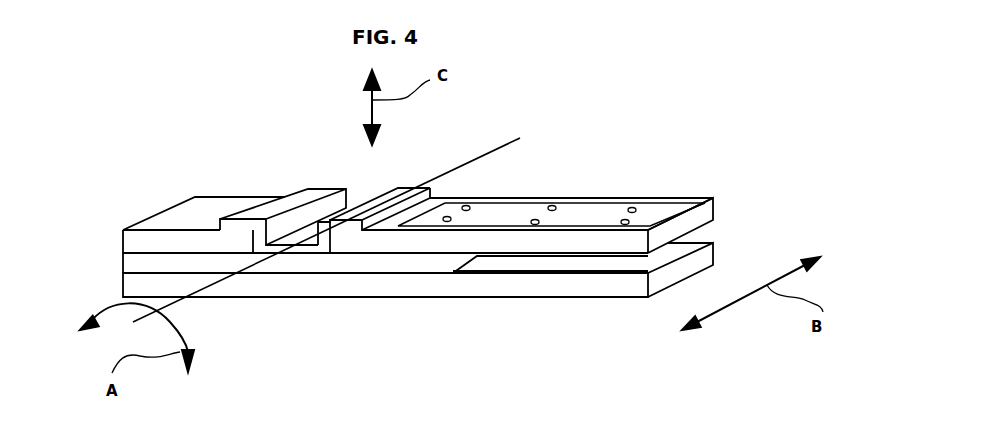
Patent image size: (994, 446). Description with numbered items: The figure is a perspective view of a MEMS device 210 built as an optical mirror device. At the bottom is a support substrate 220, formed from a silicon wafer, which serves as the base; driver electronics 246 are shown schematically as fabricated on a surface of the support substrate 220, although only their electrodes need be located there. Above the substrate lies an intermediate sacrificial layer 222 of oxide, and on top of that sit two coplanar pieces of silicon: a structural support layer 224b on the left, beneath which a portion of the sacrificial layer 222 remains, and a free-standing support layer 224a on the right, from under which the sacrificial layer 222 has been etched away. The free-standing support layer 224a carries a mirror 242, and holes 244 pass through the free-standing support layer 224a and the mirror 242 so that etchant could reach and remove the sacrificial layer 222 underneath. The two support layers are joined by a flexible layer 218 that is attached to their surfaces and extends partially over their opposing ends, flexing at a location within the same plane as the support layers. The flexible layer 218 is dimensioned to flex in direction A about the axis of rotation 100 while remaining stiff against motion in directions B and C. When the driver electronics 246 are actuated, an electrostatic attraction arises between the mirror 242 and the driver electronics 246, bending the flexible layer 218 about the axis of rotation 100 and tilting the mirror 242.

The MEMS device 210 is at (745, 97).
The axis of rotation 100 is at (492, 148).
The flexible layer 218 is at (342, 203).
The support substrate 220 is at (460, 287).
The sacrificial layer 222 is at (154, 262).
The free-standing support layer 224a is at (700, 197).
The structural support layer 224b is at (133, 247).
The mirror 242 is at (550, 206).
The holes 244 is at (445, 218).
The driver electronics 246 is at (613, 263).